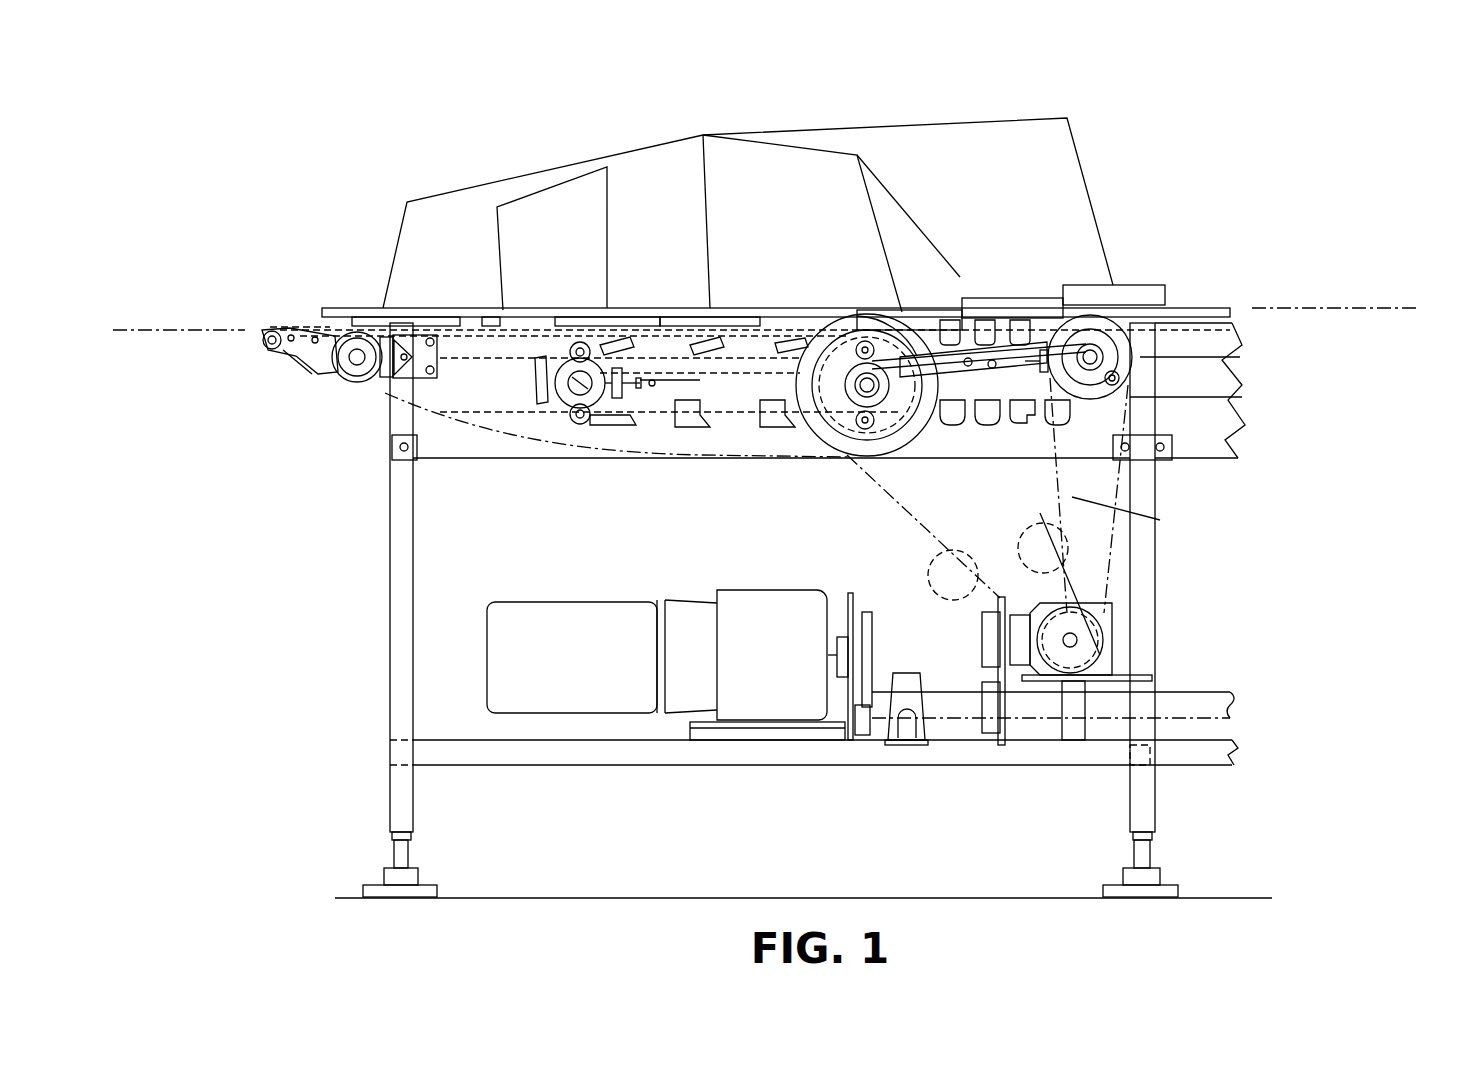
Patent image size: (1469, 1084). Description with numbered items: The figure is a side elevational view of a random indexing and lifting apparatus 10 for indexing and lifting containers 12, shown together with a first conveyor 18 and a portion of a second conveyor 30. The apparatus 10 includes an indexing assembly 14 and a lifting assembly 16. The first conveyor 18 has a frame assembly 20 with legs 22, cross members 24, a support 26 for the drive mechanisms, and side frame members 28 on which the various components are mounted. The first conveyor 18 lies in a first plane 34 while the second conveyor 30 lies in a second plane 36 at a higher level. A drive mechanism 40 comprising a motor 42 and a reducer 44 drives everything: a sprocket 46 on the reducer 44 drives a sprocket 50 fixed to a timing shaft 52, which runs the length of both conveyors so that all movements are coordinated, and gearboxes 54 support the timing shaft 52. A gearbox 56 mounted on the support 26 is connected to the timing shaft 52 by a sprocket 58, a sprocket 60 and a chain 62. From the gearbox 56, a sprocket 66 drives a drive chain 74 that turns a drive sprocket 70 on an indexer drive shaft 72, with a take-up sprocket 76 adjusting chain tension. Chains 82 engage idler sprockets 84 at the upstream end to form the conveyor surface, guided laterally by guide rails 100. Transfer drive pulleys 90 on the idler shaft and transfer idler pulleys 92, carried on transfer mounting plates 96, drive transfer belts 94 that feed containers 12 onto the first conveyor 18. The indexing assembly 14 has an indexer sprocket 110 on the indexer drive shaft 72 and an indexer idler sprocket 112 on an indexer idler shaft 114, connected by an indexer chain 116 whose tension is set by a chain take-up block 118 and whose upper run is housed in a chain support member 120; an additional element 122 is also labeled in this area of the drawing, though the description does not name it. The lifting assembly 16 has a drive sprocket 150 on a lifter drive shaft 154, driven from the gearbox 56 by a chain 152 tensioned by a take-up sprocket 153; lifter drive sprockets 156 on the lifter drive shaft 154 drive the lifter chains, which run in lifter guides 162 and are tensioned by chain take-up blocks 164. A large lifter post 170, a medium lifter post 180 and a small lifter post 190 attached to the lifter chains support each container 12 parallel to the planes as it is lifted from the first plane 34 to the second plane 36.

The random indexing and lifting apparatus 10 is at (1148, 150).
The containers 12 is at (748, 206).
The indexing assembly 14 is at (658, 275).
The lifting assembly 16 is at (957, 267).
The first conveyor 18 is at (316, 573).
The frame assembly 20 is at (1320, 608).
The legs 22 is at (402, 675).
The cross members 24 is at (455, 753).
The support 26 is at (1073, 705).
The side frame members 28 is at (1205, 385).
The second conveyor 30 is at (1228, 258).
The first plane 34 is at (190, 330).
The second plane 36 is at (1330, 295).
The drive mechanism 40 is at (655, 725).
The motor 42 is at (592, 653).
The reducer 44 is at (755, 688).
The sprocket 46 is at (843, 677).
The sprocket 50 is at (860, 735).
The timing shaft 52 is at (967, 707).
The gearboxes 54 is at (903, 672).
The gearbox 56 is at (1110, 650).
The sprocket 58 is at (990, 735).
The sprocket 60 is at (1013, 613).
The chain 62 is at (1005, 657).
The sprocket 66 is at (1107, 645).
The drive sprocket 70 is at (850, 320).
The indexer drive shaft 72 is at (865, 392).
The drive chain 74 is at (915, 512).
The take-up sprocket 76 is at (947, 600).
The chains 82 is at (476, 327).
The idler sprockets 84 is at (335, 332).
The transfer drive pulleys 90 is at (347, 383).
The transfer idler pulleys 92 is at (267, 348).
The transfer belts 94 is at (283, 362).
The transfer mounting plates 96 is at (318, 360).
The guide rails 100 is at (335, 313).
The indexer sprocket 110 is at (800, 322).
The indexer idler sprocket 112 is at (558, 402).
The indexer idler shaft 114 is at (580, 392).
The indexer chain 116 is at (740, 414).
The chain take-up block 118 is at (612, 372).
The chain support member 120 is at (662, 385).
The cleat 122 is at (702, 428).
The drive sprocket 150 is at (1135, 347).
The chain 152 is at (1110, 577).
The take-up sprocket 153 is at (1045, 523).
The lifter drive shaft 154 is at (1090, 370).
The lifter drive sprockets 156 is at (1070, 342).
The lifter guides 162 is at (1012, 350).
The chain take-up blocks 164 is at (1010, 330).
The large lifter post 170 is at (1017, 426).
The medium lifter post 180 is at (987, 425).
The small lifter post 190 is at (952, 425).